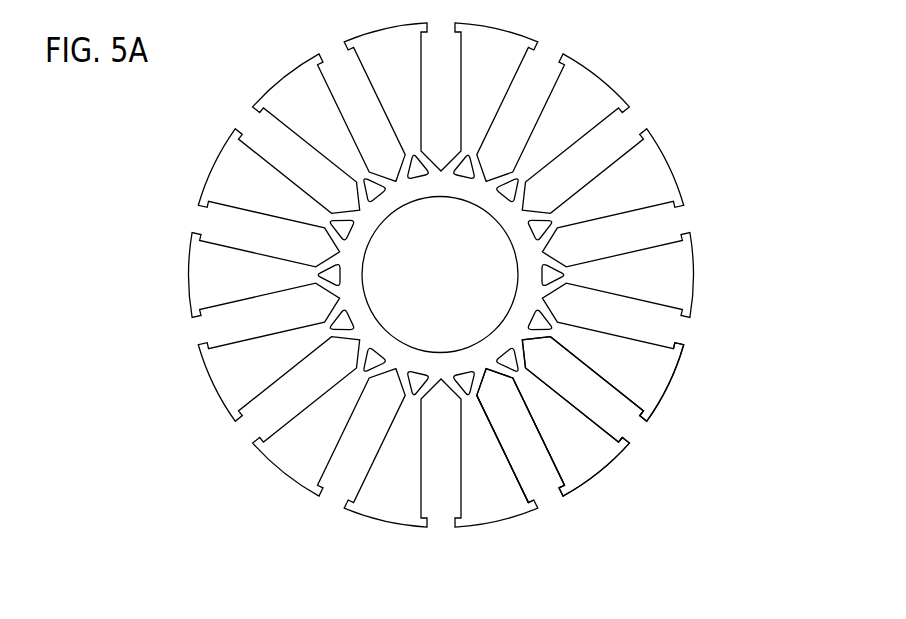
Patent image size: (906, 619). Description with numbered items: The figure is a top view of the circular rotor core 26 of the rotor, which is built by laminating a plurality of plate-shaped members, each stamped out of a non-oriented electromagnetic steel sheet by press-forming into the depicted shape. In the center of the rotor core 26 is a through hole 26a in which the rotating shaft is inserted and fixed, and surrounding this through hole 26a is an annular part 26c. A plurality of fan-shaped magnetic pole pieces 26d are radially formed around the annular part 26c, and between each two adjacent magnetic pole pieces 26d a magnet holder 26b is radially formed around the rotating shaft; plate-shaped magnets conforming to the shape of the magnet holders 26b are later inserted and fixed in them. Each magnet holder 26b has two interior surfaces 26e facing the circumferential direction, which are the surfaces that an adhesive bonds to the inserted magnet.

The rotor core 26 is at (483, 300).
The through hole 26a is at (483, 290).
The magnet holder 26b is at (602, 400).
The annular part 26c is at (528, 252).
The magnetic pole piece 26d is at (655, 368).
The interior surface of the magnet holder 26e is at (524, 422).